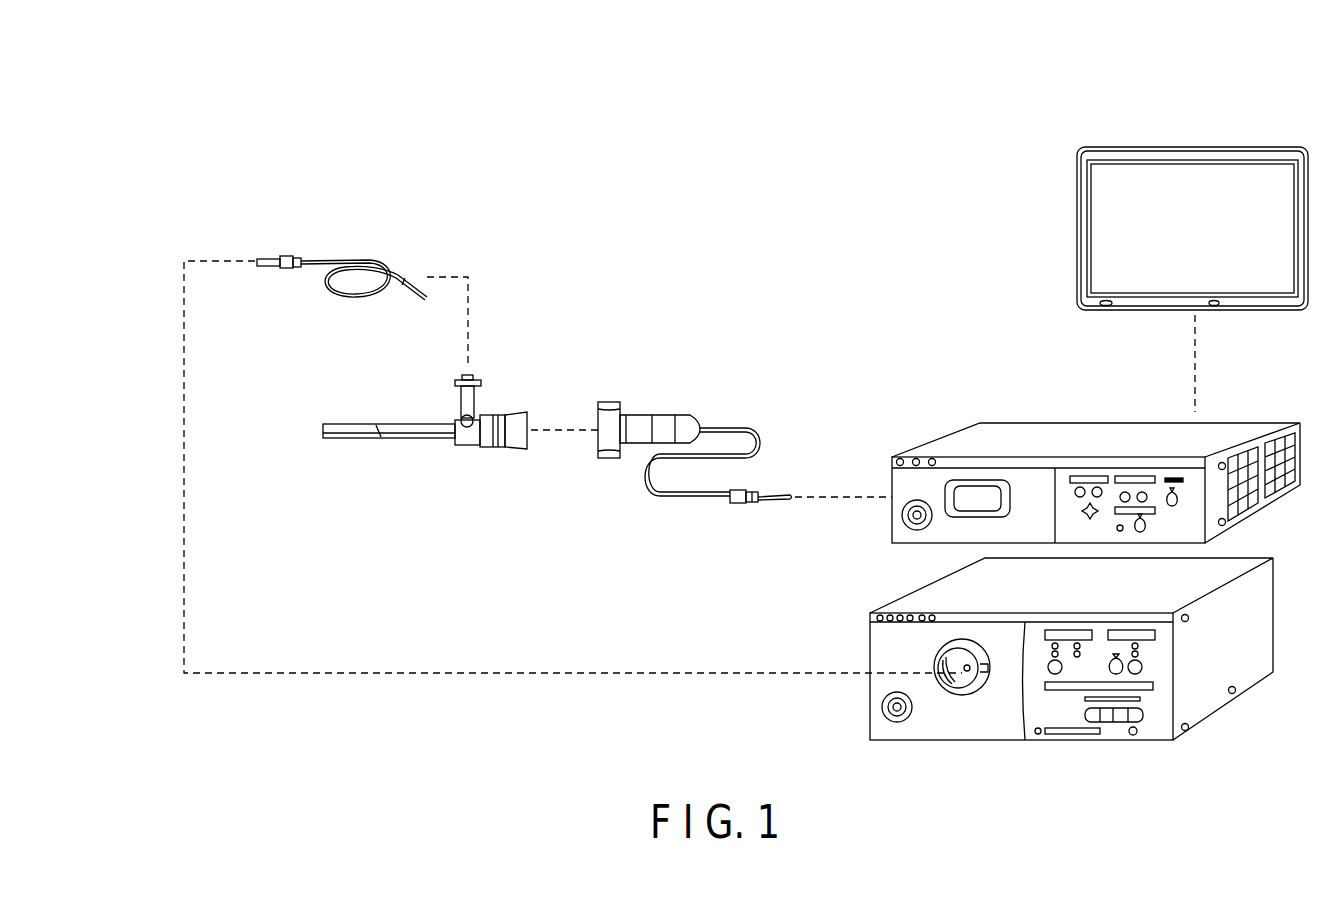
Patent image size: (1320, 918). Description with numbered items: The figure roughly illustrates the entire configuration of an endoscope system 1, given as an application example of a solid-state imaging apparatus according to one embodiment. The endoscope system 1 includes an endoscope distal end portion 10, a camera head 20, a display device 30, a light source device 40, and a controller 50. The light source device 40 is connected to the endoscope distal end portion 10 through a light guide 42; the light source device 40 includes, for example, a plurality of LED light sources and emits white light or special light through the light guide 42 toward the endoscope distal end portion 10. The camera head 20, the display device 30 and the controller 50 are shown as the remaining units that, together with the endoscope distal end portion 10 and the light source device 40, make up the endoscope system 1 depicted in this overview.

The endoscope system 1 is at (1016, 100).
The endoscope distal end portion 10 is at (418, 439).
The camera head 20 is at (665, 415).
The display device 30 is at (1191, 147).
The light source device 40 is at (1010, 740).
The light guide 42 is at (359, 258).
The controller 50 is at (1026, 430).